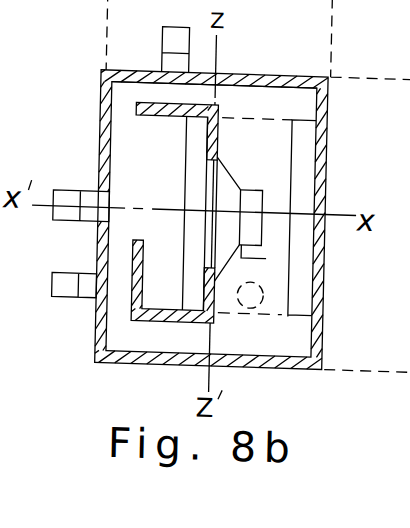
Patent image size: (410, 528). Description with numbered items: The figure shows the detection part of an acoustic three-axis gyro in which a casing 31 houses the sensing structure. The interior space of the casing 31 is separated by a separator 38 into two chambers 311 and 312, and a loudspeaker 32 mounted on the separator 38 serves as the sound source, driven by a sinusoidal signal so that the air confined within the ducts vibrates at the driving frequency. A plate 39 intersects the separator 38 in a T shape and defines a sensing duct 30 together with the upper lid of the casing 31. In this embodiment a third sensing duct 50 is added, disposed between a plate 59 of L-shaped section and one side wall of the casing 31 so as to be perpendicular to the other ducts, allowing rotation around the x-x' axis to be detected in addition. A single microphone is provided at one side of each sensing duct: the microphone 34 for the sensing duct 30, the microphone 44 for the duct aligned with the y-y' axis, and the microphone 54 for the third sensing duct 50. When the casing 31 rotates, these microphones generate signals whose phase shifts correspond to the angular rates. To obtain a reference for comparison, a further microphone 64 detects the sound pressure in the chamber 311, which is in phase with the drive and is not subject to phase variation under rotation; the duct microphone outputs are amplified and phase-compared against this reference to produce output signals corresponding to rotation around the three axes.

The sensing duct 30 is at (150, 97).
The casing 31 is at (112, 74).
The chamber 311 is at (194, 195).
The chamber 312 is at (252, 217).
The loudspeaker 32 is at (217, 157).
The microphone 34 is at (186, 44).
The separator 38 is at (216, 318).
The plate 39 is at (156, 119).
The microphone 44 is at (266, 292).
The third sensing duct 50 is at (116, 261).
The microphone 54 is at (64, 305).
The plate of L-shaped section 59 is at (173, 281).
The microphone 64 is at (68, 195).